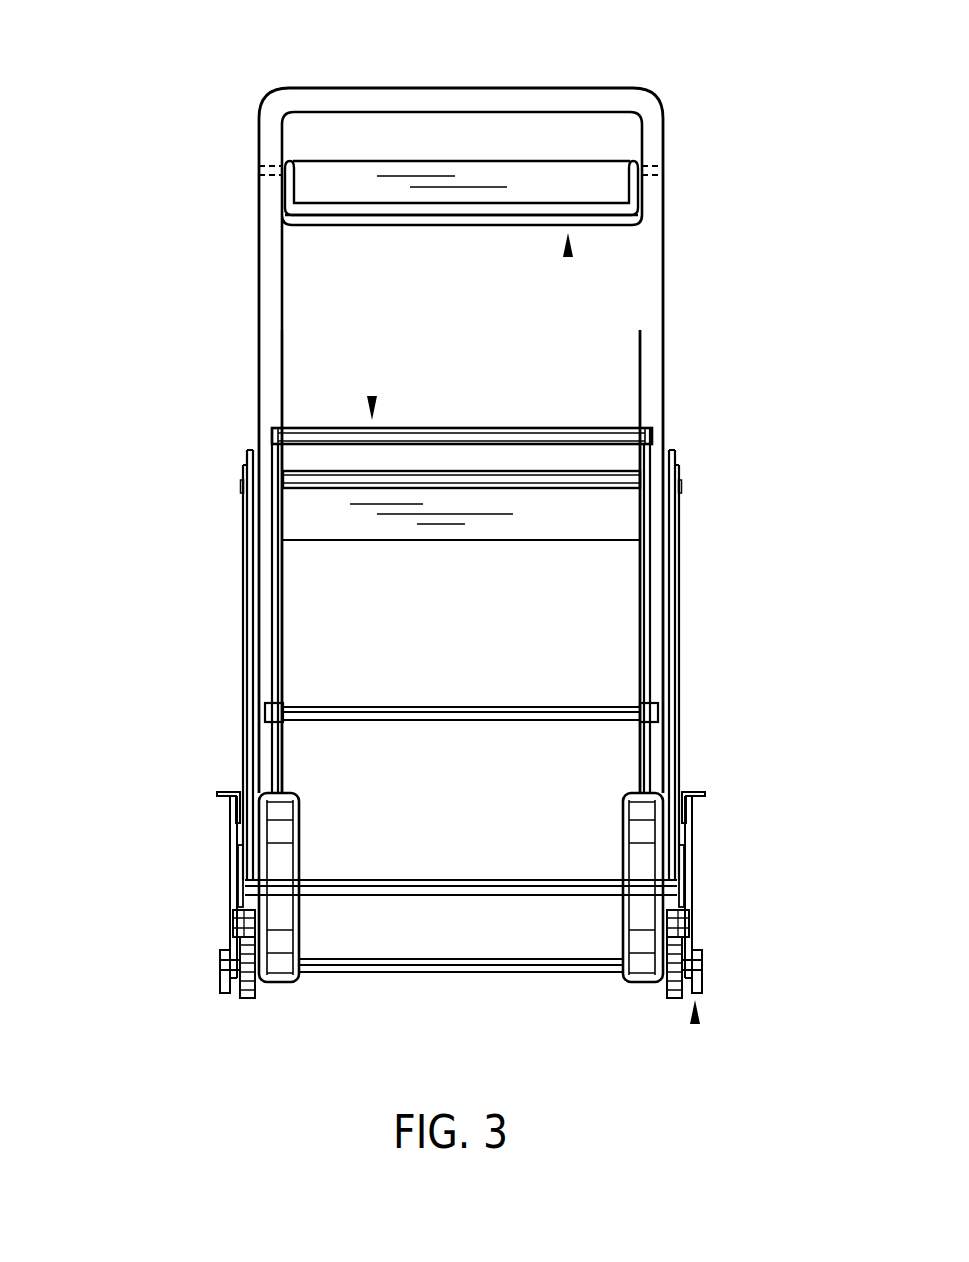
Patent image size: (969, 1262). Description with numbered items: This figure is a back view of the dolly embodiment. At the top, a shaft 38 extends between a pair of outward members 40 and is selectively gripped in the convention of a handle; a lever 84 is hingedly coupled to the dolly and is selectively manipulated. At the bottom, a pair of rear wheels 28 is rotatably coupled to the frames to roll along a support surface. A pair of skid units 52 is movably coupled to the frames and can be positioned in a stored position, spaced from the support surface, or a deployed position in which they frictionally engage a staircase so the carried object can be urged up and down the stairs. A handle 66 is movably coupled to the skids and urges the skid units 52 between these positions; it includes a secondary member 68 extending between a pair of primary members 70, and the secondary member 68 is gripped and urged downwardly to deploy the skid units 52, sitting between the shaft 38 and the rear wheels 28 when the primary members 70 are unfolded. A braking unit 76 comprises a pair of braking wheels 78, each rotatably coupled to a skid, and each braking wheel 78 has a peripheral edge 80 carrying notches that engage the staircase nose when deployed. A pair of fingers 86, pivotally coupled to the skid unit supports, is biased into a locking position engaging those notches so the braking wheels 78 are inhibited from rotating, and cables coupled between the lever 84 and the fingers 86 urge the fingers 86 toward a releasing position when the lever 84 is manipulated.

The rear wheels 28 is at (283, 982).
The shaft 38 is at (458, 88).
The outward members 40 is at (258, 313).
The skid units 52 is at (195, 899).
The handle 66 is at (372, 398).
The secondary member 68 is at (482, 428).
The primary members 70 is at (272, 583).
The braking unit 76 is at (570, 255).
The braking wheels 78 is at (243, 998).
The peripheral edge 80 is at (249, 998).
The lever 84 is at (303, 228).
The fingers 86 is at (231, 927).